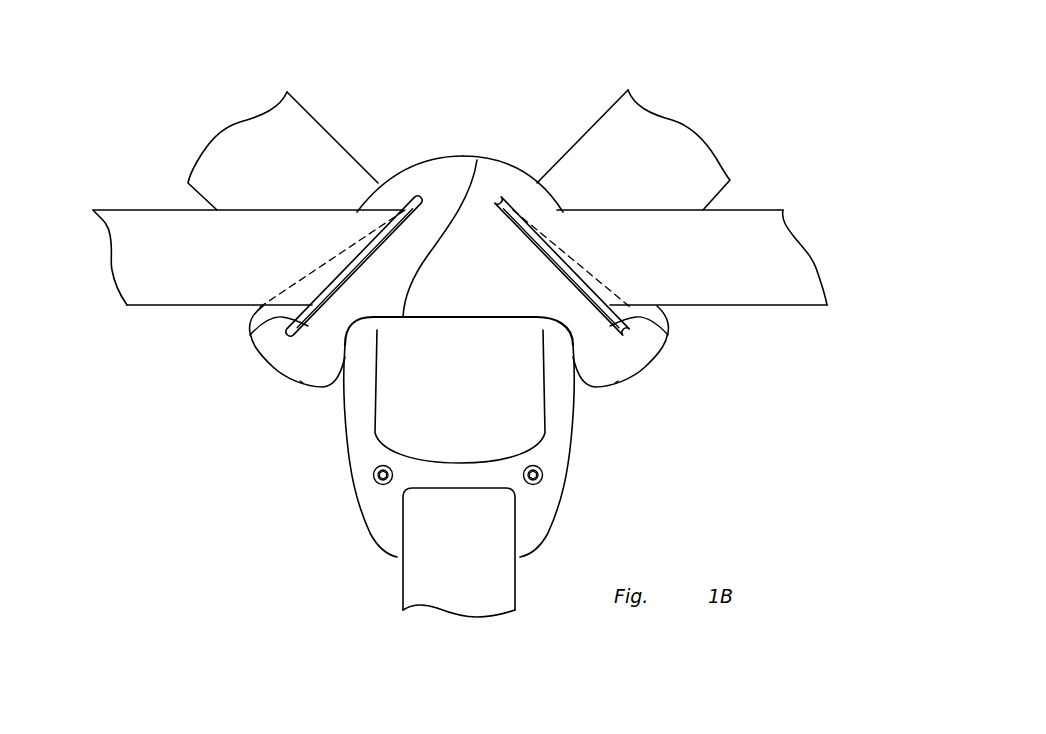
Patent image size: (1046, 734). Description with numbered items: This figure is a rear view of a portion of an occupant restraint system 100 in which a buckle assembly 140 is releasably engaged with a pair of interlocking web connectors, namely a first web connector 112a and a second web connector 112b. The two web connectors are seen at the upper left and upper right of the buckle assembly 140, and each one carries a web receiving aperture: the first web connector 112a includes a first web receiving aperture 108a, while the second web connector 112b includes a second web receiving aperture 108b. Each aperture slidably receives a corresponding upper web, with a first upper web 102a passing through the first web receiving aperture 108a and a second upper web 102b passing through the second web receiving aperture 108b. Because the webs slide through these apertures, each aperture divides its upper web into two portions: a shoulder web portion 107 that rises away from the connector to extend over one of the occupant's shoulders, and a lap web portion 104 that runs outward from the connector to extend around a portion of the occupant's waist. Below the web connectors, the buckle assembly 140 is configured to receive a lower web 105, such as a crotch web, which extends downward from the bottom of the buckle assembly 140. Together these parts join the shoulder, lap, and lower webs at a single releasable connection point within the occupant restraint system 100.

The occupant restraint system 100 is at (137, 134).
The first upper web 102a is at (677, 158).
The second upper web 102b is at (320, 153).
The lap web portion 104 is at (172, 290).
The lower web 105 is at (433, 583).
The shoulder web portion 107 is at (265, 137).
The first web receiving aperture 108a is at (670, 325).
The second web receiving aperture 108b is at (250, 335).
The first web connector 112a is at (630, 353).
The second web connector 112b is at (305, 372).
The buckle assembly 140 is at (556, 478).